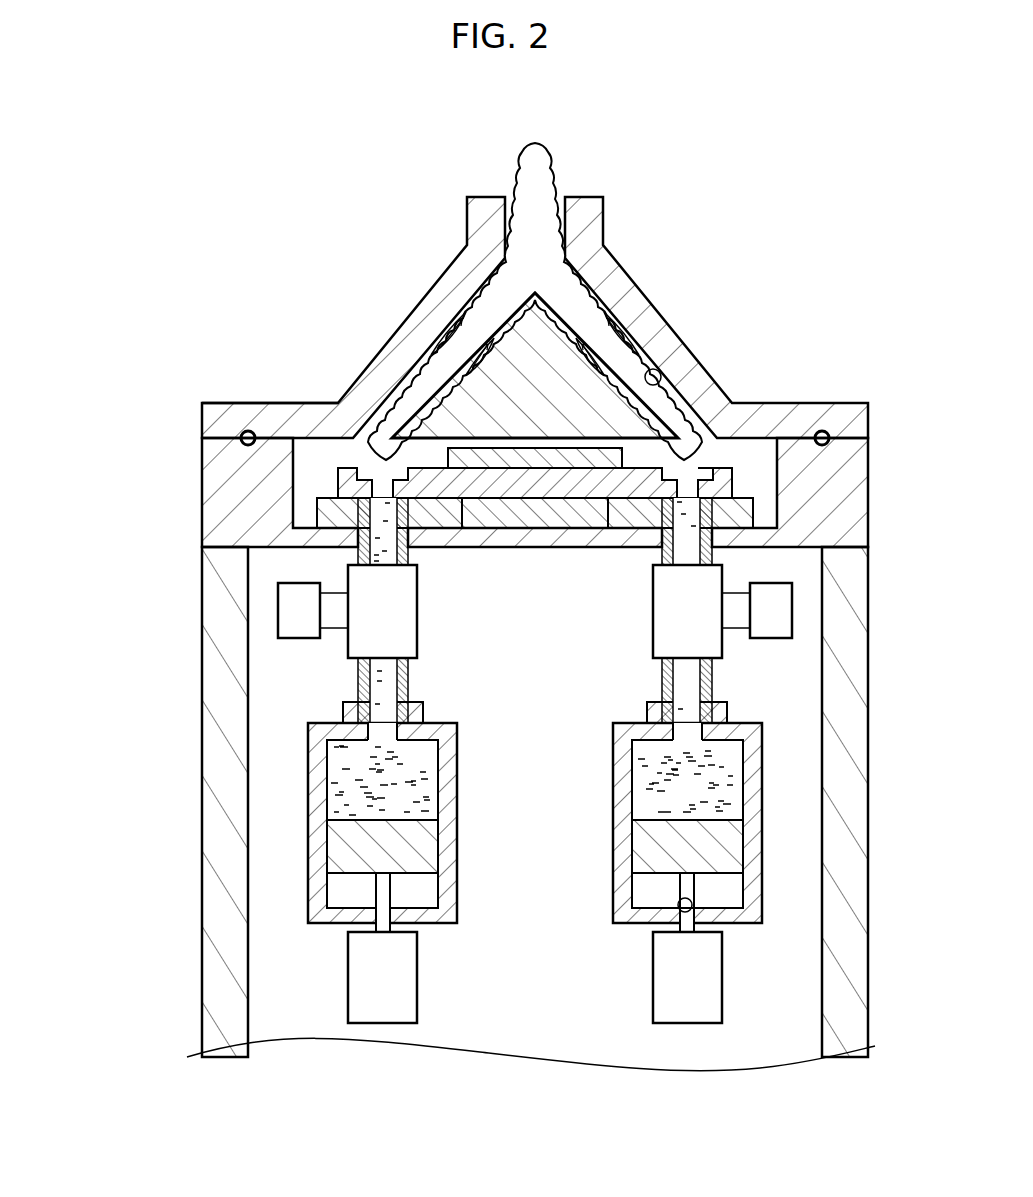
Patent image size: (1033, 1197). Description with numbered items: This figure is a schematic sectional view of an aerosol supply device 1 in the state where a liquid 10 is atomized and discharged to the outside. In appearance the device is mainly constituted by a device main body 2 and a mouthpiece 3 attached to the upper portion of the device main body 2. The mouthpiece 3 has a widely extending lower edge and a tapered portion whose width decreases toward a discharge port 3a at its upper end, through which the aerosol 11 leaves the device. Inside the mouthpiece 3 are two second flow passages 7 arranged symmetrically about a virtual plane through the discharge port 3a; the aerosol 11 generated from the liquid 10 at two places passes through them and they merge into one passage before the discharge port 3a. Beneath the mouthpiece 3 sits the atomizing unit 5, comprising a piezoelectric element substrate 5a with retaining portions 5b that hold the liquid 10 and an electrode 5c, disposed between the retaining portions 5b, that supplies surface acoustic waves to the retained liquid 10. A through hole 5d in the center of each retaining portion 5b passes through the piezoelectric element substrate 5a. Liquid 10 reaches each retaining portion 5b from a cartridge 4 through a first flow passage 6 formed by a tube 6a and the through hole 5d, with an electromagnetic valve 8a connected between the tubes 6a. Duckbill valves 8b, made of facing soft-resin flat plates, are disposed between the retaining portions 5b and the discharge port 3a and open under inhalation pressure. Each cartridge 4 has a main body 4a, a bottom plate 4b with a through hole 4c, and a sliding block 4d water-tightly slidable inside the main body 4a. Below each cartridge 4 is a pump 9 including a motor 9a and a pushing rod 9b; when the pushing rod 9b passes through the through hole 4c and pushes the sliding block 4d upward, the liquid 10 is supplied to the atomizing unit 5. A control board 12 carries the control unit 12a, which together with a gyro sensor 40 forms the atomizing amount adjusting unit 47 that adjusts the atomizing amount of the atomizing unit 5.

The aerosol supply device 1 is at (769, 190).
The device main body 2 is at (891, 570).
The mouthpiece 3 is at (650, 257).
The discharge port 3a is at (559, 196).
The cartridge 4 is at (771, 740).
The main body 4a is at (761, 793).
The bottom plate 4b is at (722, 924).
The through hole 4c is at (693, 905).
The sliding block 4d is at (733, 843).
The atomizing unit 5 is at (322, 483).
The piezoelectric element substrate 5a is at (726, 484).
The retaining portion 5b is at (702, 458).
The electrode 5c is at (484, 447).
The through hole 5d is at (717, 466).
The first flow passage 6 is at (358, 555).
The tube 6a is at (358, 675).
The second flow passage 7 is at (666, 384).
The electromagnetic valve 8a is at (286, 617).
The duckbill valve 8b is at (441, 322).
The pump 9 is at (128, 868).
The motor 9a is at (348, 976).
The pushing rod 9b is at (377, 888).
The liquid 10 is at (738, 770).
The aerosol 11 is at (518, 148).
The control board 12 is at (323, 515).
The control unit 12a is at (389, 513).
The gyro sensor 40 is at (535, 513).
The atomizing amount adjusting unit 47 is at (680, 513).